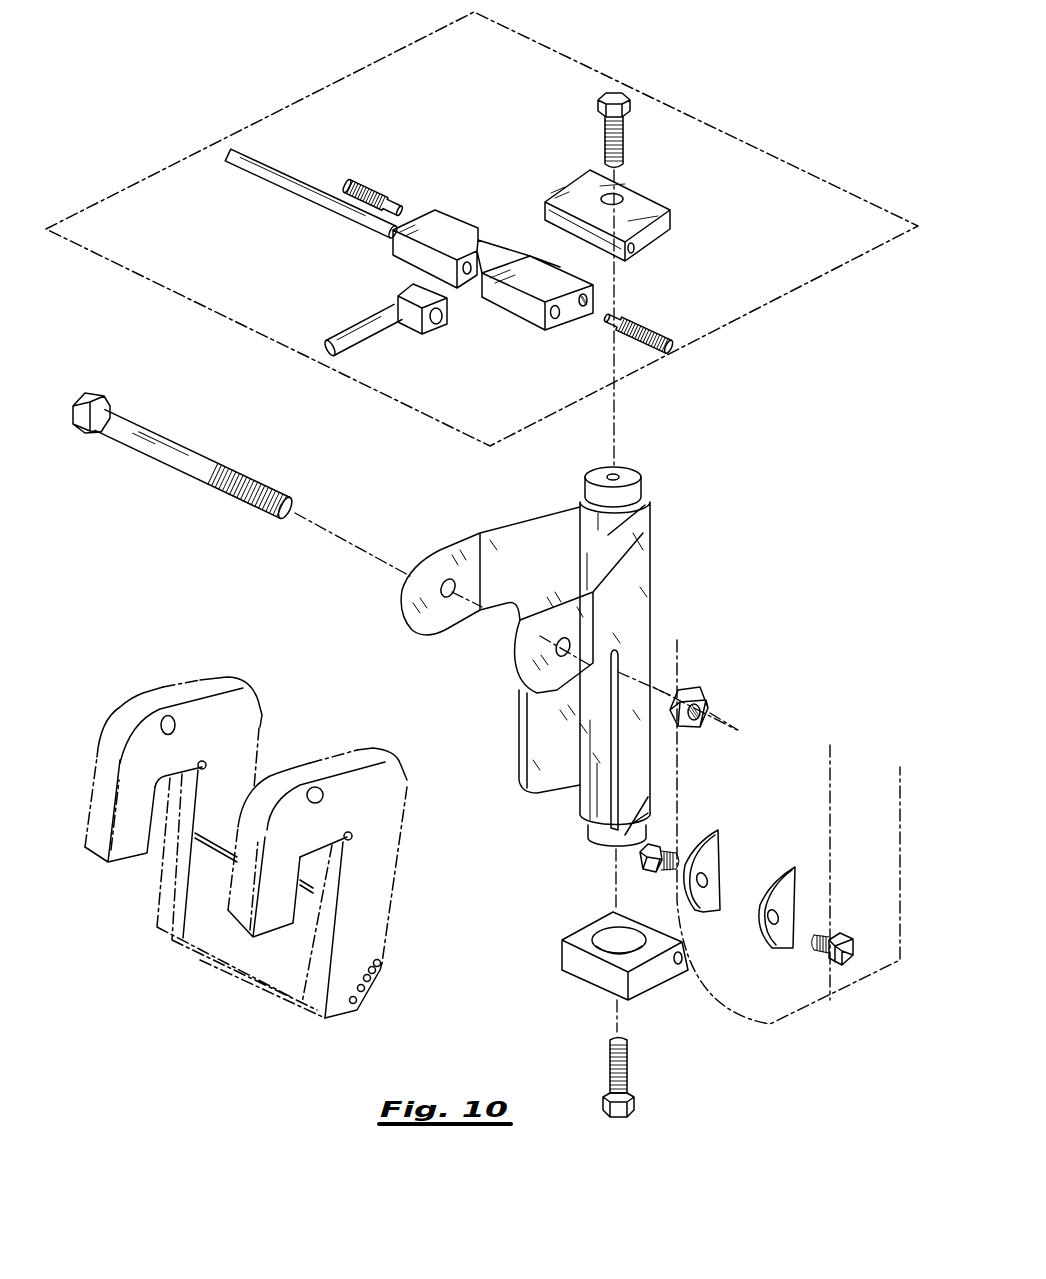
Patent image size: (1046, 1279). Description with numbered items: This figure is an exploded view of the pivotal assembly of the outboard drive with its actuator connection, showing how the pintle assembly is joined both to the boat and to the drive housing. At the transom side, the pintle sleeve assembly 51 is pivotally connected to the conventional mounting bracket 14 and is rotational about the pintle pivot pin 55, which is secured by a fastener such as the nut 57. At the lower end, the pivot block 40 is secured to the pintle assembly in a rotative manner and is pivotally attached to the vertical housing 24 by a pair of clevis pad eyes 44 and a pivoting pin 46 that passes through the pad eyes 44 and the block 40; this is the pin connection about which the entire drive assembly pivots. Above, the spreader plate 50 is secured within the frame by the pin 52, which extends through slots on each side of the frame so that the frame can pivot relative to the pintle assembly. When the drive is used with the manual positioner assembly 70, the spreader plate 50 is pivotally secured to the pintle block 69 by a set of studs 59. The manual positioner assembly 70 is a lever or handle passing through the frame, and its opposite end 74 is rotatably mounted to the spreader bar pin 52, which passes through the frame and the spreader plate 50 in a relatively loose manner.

The mounting bracket 14 is at (375, 862).
The vertical housing 24 is at (790, 1017).
The pivot block 40 is at (578, 937).
The clevis pad eyes 44 is at (707, 905).
The pivoting pin 46 is at (640, 860).
The spreader plate 50 is at (447, 228).
The pintle sleeve assembly 51 is at (632, 513).
The pin 52 is at (263, 170).
The pintle pivot pin 55 is at (135, 428).
The nut 57 is at (690, 688).
The studs 59 is at (368, 188).
The pintle block 69 is at (648, 208).
The manual positioner assembly 70 is at (160, 162).
The opposite end 74 is at (436, 333).